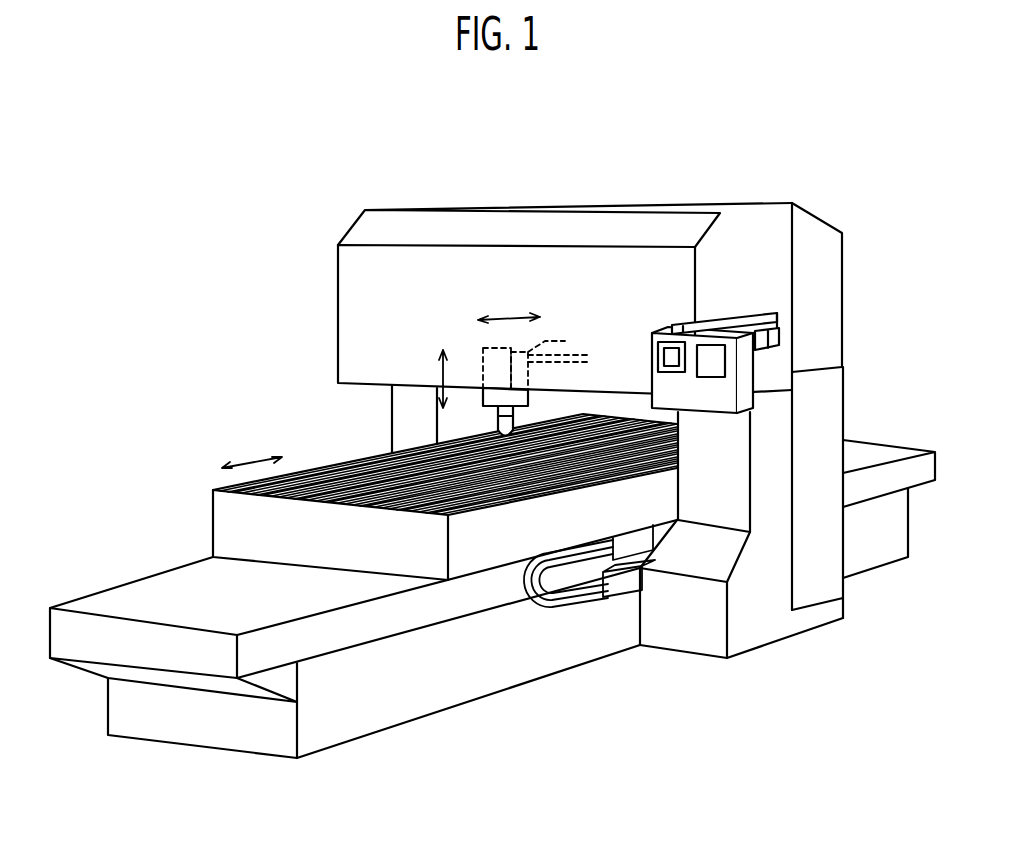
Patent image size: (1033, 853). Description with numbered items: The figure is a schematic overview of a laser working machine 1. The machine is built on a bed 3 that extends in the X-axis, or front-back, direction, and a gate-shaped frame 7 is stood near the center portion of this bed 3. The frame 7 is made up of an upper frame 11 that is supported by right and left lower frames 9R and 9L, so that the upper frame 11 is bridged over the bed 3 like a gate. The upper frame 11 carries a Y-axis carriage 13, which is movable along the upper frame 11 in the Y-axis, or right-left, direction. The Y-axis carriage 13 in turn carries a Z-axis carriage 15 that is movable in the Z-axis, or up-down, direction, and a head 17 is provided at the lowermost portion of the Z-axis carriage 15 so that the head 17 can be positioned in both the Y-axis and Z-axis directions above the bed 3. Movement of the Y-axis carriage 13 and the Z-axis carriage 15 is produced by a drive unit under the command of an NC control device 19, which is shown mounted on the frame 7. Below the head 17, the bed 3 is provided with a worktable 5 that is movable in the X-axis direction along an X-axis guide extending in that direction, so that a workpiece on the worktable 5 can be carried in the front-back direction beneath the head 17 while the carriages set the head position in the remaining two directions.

The laser working machine 1 is at (578, 185).
The bed 3 is at (482, 663).
The worktable 5 is at (232, 527).
The gate-shaped frame 7 is at (820, 292).
The left lower frame 9L is at (392, 407).
The right lower frame 9R is at (830, 404).
The upper frame 11 is at (353, 288).
The Y-axis carriage 13 is at (565, 341).
The Z-axis carriage 15 is at (512, 418).
The head 17 is at (496, 424).
The NC control device 19 is at (710, 402).